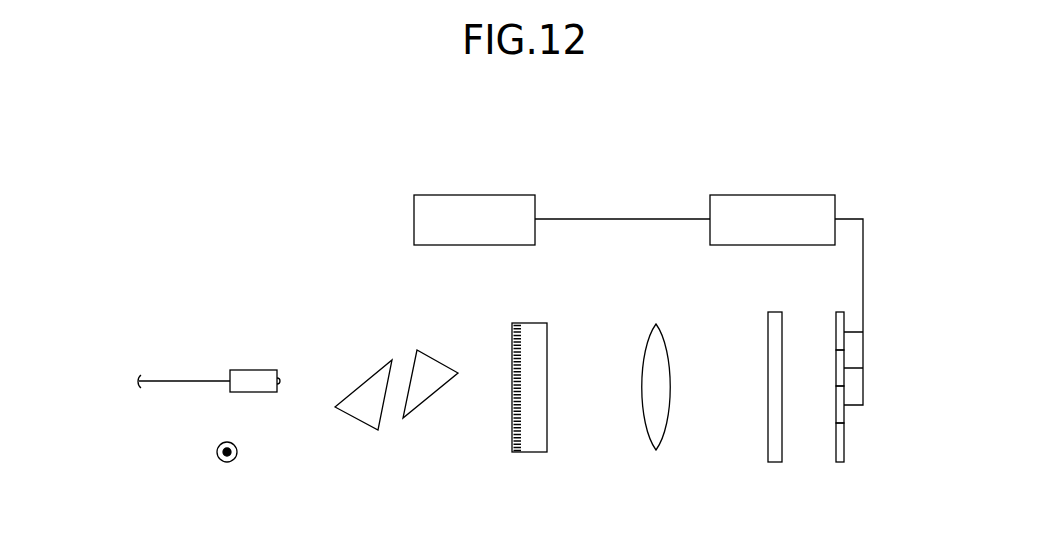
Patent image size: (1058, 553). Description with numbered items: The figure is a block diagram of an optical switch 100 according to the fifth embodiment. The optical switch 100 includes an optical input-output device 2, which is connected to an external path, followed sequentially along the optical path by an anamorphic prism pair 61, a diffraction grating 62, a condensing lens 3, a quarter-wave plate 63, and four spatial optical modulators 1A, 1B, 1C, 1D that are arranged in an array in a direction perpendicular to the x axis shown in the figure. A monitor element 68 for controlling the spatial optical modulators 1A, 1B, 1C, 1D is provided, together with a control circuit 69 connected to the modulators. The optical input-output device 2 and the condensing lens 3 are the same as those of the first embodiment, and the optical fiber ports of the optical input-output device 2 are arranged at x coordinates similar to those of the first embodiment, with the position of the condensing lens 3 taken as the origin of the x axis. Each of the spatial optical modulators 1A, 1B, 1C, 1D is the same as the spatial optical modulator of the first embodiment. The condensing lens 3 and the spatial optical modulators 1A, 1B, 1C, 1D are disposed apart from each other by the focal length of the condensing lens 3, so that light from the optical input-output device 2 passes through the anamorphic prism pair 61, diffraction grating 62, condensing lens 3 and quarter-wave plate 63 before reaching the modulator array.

The optical switch 100 is at (791, 131).
The optical input-output device 2 is at (253, 343).
The anamorphic prism pair 61 is at (383, 450).
The diffraction grating 62 is at (528, 452).
The condensing lens 3 is at (656, 450).
The quarter-wave plate 63 is at (774, 462).
The monitor element 68 is at (500, 195).
The control circuit 69 is at (795, 195).
The spatial optical modulator 1A is at (836, 328).
The spatial optical modulator 1B is at (836, 368).
The spatial optical modulator 1C is at (844, 415).
The spatial optical modulator 1D is at (844, 452).